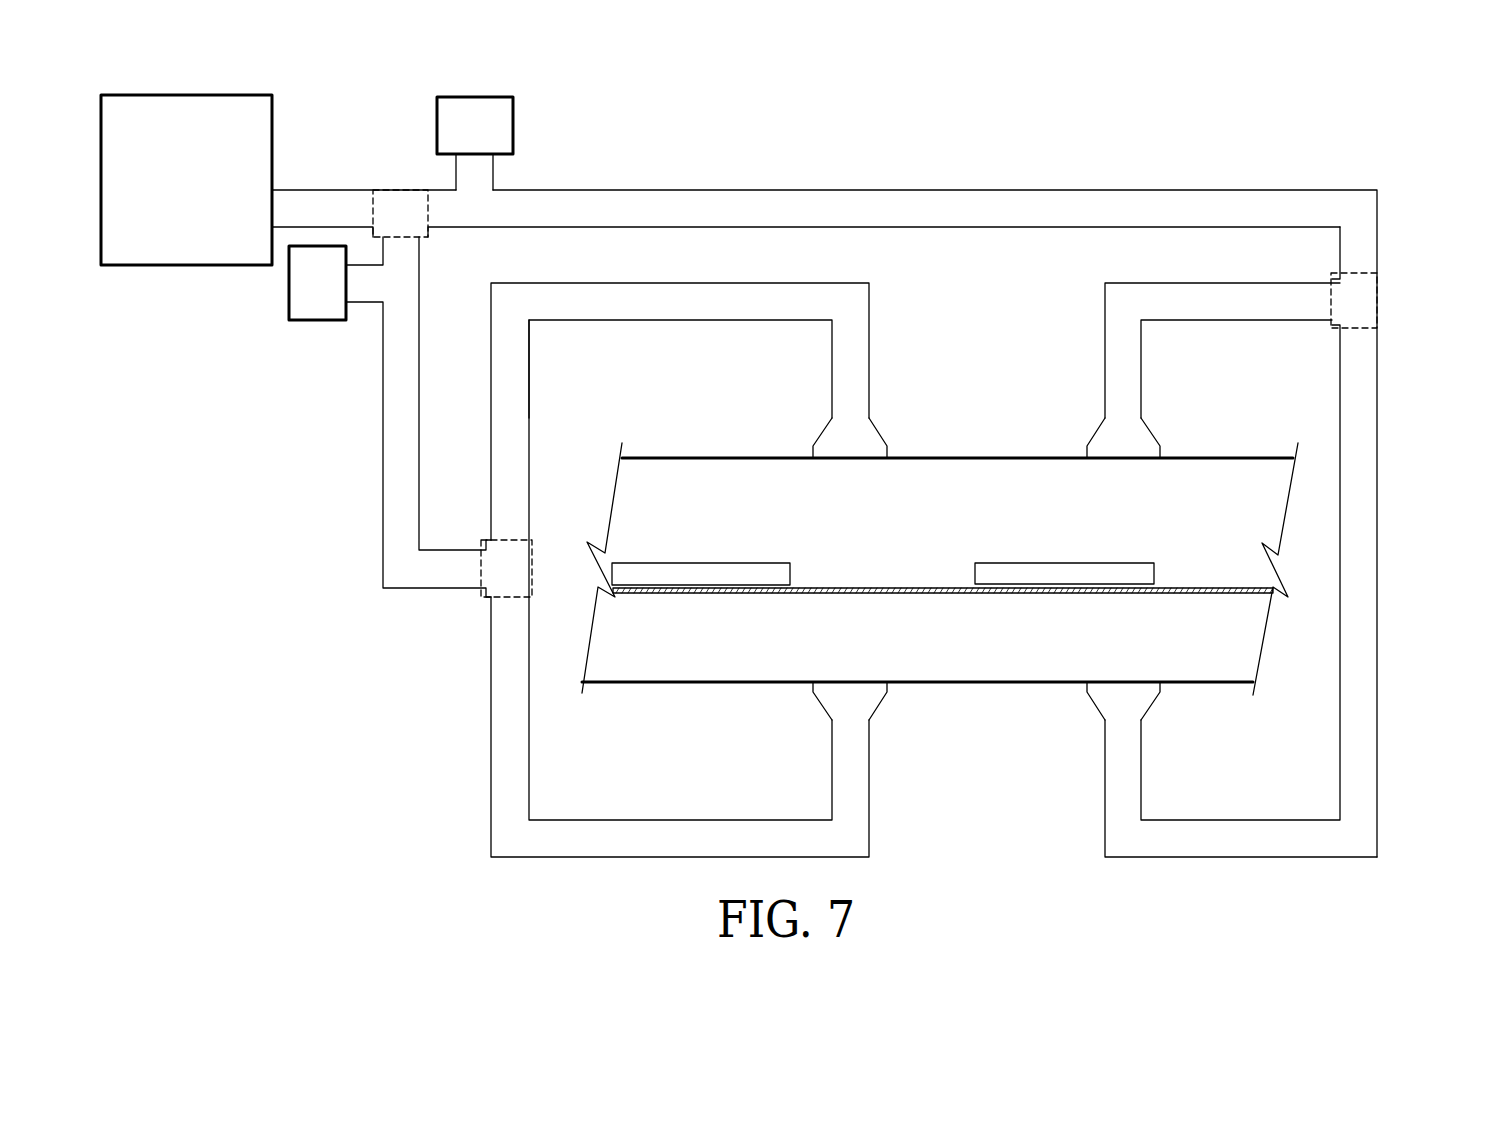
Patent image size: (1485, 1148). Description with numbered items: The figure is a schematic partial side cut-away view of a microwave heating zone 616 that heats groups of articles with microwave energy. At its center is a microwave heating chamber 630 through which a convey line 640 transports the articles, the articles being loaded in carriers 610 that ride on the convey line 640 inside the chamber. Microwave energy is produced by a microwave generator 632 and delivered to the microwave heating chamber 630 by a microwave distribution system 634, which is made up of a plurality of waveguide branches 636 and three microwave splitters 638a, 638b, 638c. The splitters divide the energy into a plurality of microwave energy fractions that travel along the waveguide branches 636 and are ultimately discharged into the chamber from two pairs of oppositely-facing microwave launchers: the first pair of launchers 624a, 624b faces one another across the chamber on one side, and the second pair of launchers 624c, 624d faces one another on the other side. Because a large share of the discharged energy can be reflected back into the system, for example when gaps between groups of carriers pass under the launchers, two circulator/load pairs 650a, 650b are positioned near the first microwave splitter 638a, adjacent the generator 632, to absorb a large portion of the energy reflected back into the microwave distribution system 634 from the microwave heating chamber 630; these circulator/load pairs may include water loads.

The microwave heating zone 616 is at (1402, 158).
The carriers 610 is at (1072, 562).
The microwave launcher 624a is at (835, 433).
The microwave launcher 624b is at (833, 707).
The microwave launcher 624c is at (1142, 430).
The microwave launcher 624d is at (1142, 707).
The microwave heating chamber 630 is at (1247, 457).
The microwave generator 632 is at (272, 125).
The microwave distribution system 634 is at (362, 655).
The waveguide branches 636 is at (973, 190).
The microwave splitter 638a is at (396, 200).
The microwave splitter 638b is at (494, 575).
The microwave splitter 638c is at (1367, 297).
The convey line 640 is at (925, 593).
The circulator/load pair 650a is at (334, 337).
The circulator/load pair 650b is at (518, 118).